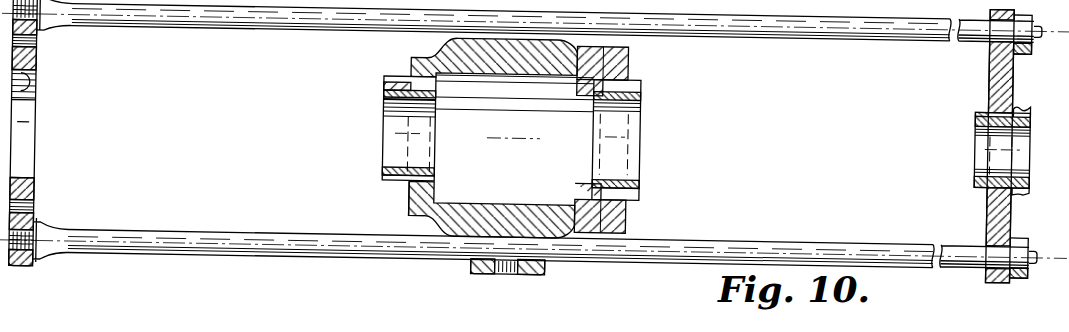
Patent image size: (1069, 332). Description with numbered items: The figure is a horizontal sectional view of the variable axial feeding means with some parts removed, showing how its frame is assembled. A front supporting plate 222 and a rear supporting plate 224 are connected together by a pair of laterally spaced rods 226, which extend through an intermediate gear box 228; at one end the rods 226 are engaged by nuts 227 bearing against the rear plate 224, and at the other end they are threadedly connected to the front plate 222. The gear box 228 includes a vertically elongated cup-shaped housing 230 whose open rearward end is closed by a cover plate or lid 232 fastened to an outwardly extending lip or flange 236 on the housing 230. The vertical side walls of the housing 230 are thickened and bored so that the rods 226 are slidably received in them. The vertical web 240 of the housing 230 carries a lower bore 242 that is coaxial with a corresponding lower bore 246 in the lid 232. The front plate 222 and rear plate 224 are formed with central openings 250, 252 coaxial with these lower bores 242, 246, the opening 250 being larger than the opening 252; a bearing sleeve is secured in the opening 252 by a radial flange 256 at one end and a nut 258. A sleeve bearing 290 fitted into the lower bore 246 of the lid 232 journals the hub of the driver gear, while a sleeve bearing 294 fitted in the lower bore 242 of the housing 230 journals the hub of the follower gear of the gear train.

The front supporting plate 222 is at (36, 63).
The rear supporting plate 224 is at (993, 62).
The laterally spaced rods 226 is at (201, 12).
The nuts 227 is at (1040, 0).
The intermediate gear box 228 is at (613, 0).
The cup-shaped housing 230 is at (450, 207).
The cover plate or lid 232 is at (623, 66).
The outwardly extending lip or flange 236 is at (583, 228).
The vertical web 240 is at (410, 205).
The lower bore 242 is at (383, 105).
The lower bore 246 is at (642, 108).
The central opening 250 is at (37, 95).
The central opening 252 is at (1017, 140).
The radial flange 256 is at (982, 188).
The nut 258 is at (1027, 111).
The sleeve bearing 290 is at (623, 174).
The sleeve bearing 294 is at (423, 169).